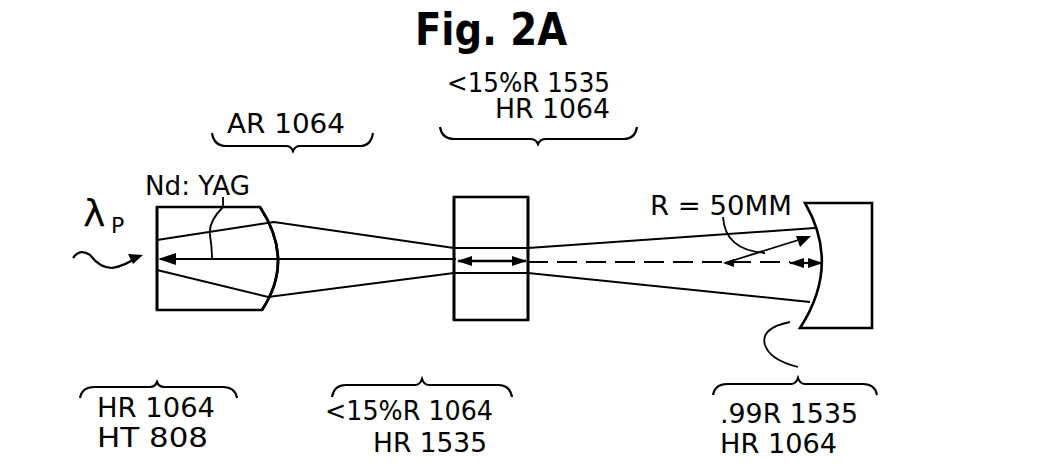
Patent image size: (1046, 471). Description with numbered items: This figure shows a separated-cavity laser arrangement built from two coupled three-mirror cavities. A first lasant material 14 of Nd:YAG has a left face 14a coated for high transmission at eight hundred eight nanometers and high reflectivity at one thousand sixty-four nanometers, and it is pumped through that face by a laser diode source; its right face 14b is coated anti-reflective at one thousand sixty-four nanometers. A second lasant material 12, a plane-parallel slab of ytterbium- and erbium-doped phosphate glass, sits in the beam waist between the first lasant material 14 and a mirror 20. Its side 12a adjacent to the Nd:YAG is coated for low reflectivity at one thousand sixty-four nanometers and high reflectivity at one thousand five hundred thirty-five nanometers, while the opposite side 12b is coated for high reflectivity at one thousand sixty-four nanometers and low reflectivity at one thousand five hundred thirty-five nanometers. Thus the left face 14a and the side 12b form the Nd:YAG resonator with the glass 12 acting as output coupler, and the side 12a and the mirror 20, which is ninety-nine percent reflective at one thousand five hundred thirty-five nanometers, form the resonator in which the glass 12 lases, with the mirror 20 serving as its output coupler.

The second lasant material 12 is at (507, 303).
The side of the second lasant material adjacent to the first lasant material 12a is at (455, 292).
The opposite side of the second lasant material 12b is at (526, 214).
The first lasant material 14 is at (233, 298).
The left face of the first lasant material 14a is at (158, 292).
The right face of the first lasant material 14b is at (262, 207).
The mirror 20 is at (840, 217).